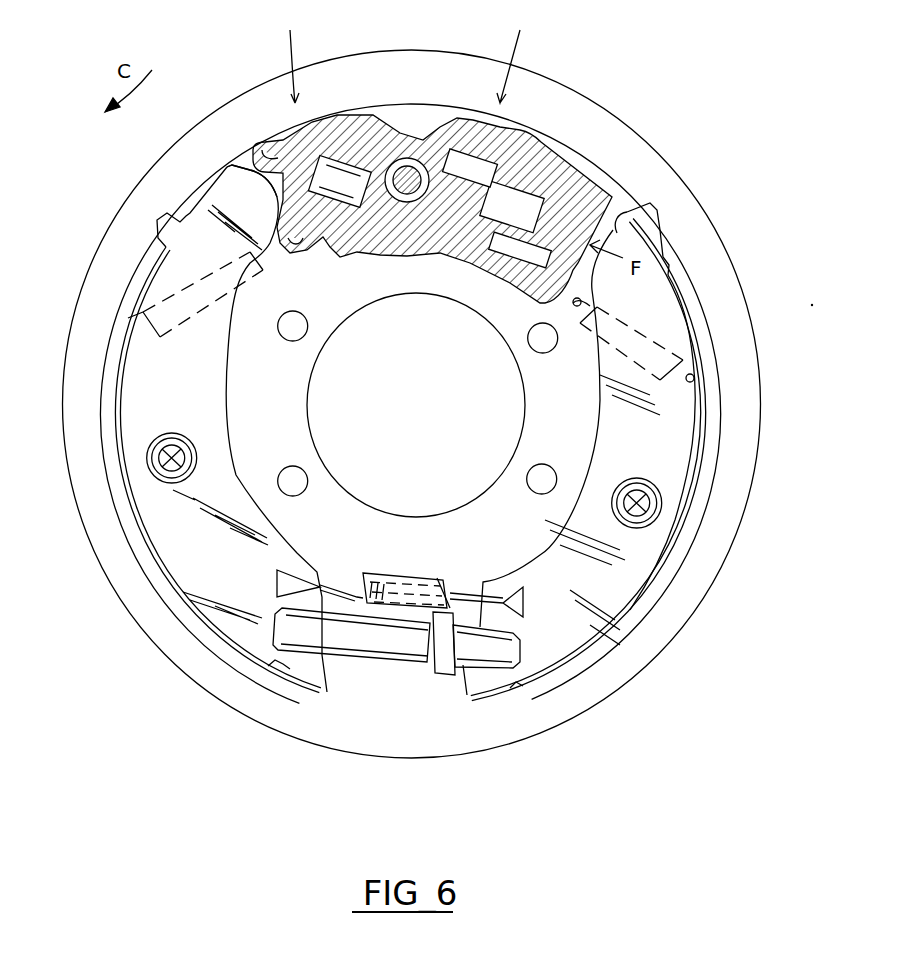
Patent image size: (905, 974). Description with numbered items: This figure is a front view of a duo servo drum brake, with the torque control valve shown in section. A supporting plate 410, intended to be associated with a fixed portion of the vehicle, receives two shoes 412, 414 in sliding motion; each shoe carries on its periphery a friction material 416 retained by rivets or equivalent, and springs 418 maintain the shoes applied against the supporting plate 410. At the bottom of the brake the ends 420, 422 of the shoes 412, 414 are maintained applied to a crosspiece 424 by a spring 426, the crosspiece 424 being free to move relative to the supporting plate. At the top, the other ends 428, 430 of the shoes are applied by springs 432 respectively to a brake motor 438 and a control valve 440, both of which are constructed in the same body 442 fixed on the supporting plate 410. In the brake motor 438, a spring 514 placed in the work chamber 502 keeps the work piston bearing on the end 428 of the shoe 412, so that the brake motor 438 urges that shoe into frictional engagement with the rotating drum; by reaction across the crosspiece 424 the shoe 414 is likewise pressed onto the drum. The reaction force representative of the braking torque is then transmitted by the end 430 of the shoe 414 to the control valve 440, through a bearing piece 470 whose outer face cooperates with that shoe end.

The supporting plate 410 is at (598, 127).
The shoe 412 is at (172, 257).
The shoe 414 is at (660, 323).
The friction material 416 is at (122, 314).
The springs 418 is at (157, 477).
The end of shoe 412 420 is at (240, 655).
The end of shoe 414 422 is at (522, 647).
The crosspiece 424 is at (350, 640).
The spring 426 is at (427, 573).
The end of shoe 412 428 is at (233, 188).
The end of shoe 414 430 is at (627, 207).
The springs 432 is at (225, 330).
The brake motor 438 is at (278, 53).
The control valve 440 is at (529, 53).
The body 442 is at (432, 153).
The bearing piece 470 is at (617, 233).
The work chamber 502 is at (373, 128).
The spring 514 is at (333, 118).